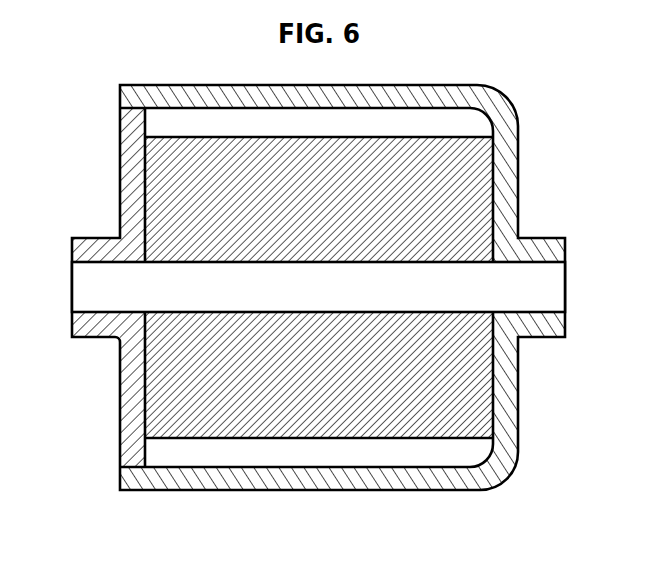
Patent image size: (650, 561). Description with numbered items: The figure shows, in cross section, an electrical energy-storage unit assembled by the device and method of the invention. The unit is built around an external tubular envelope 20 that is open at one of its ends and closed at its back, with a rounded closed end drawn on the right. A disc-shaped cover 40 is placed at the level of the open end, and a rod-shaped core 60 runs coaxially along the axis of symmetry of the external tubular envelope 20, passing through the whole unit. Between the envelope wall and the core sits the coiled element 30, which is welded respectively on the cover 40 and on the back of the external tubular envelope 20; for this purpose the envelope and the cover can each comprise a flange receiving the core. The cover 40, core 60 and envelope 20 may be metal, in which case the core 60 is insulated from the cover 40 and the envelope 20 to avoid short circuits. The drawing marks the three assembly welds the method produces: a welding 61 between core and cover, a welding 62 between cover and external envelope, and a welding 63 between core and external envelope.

The external tubular envelope 20 is at (274, 478).
The coiled element 30 is at (460, 378).
The cover 40 is at (130, 394).
The core 60 is at (551, 289).
The welding core/cover 61 is at (101, 262).
The welding cover/external envelope 62 is at (133, 109).
The welding core/external envelope 63 is at (540, 258).